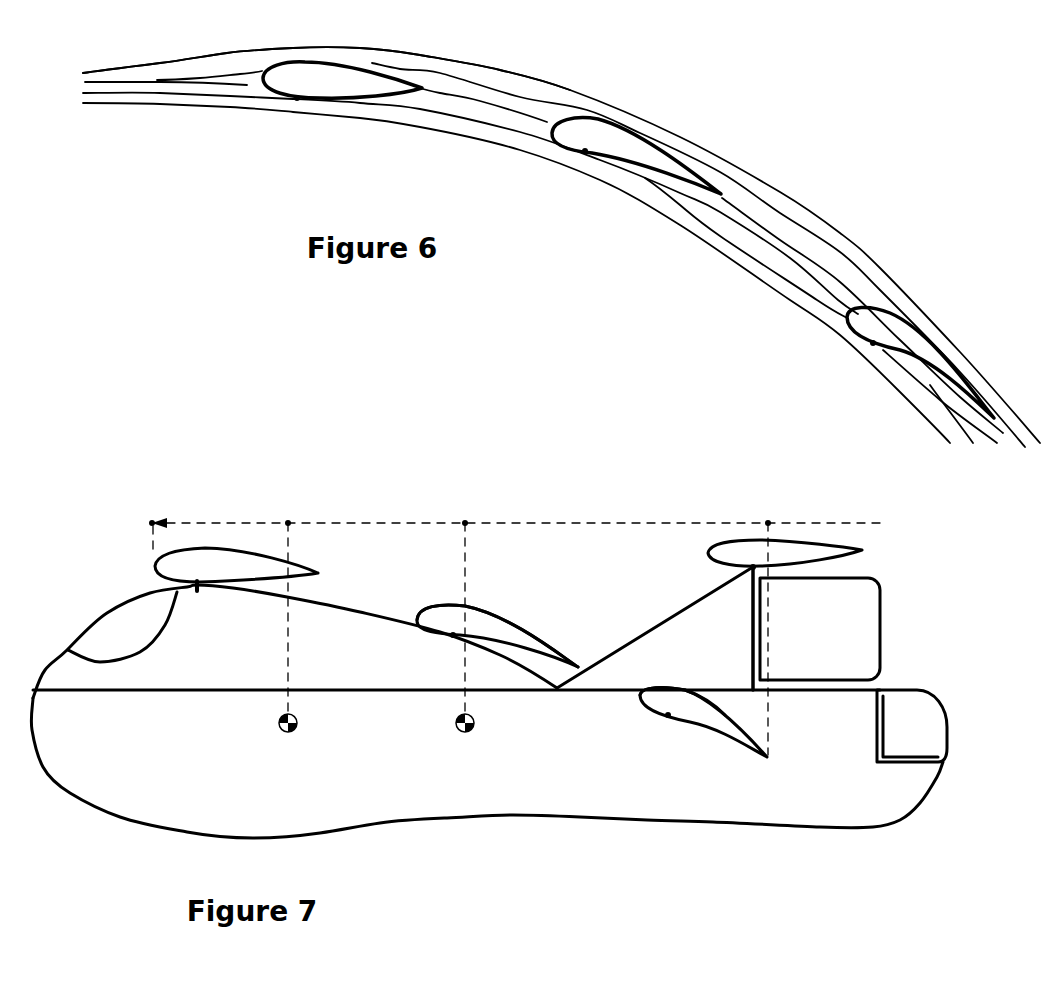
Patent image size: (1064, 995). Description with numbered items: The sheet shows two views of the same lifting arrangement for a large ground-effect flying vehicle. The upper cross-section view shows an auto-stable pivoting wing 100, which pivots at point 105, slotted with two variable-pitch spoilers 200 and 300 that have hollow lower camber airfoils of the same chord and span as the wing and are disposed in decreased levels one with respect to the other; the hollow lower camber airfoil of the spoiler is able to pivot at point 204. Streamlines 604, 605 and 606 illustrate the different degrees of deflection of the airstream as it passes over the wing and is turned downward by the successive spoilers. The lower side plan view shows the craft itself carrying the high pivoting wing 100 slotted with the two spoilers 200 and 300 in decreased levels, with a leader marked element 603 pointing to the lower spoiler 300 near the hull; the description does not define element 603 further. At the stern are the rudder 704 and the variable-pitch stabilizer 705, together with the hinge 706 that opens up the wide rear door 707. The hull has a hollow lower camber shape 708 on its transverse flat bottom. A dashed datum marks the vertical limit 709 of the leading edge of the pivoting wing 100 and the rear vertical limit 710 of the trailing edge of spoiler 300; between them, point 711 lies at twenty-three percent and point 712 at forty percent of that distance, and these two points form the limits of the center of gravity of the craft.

In FIG. 6, the pivoting wing 100 is at (326, 58).
In FIG. 7, the pivoting wing 100 is at (222, 560).
In FIG. 6, the pivot point 105 is at (297, 98).
In FIG. 7, the pivot point 105 is at (192, 585).
In FIG. 6, the spoiler 200 is at (613, 140).
In FIG. 7, the spoiler 200 is at (510, 633).
In FIG. 7, the pivot point of hollow lower camber airfoil 204 is at (447, 613).
In FIG. 6, the spoiler 300 is at (895, 337).
In FIG. 7, the spoiler 300 is at (697, 710).
In FIG. 7, the rear wing upper surface 603 is at (670, 700).
In FIG. 6, the airstream deflection 604 is at (490, 104).
In FIG. 6, the airstream deflection 605 is at (785, 253).
In FIG. 6, the airstream deflection 606 is at (1003, 437).
In FIG. 7, the rudder 704 is at (867, 620).
In FIG. 7, the variable-pitch stabilizer 705 is at (867, 556).
In FIG. 7, the hinge 706 is at (880, 686).
In FIG. 7, the rear door 707 is at (935, 731).
In FIG. 7, the hollow lower camber hull bottom 708 is at (450, 823).
In FIG. 7, the vertical limit of leading edge 709 is at (155, 522).
In FIG. 7, the rear vertical limit of trailing edge 710 is at (768, 518).
In FIG. 7, the center of gravity limit point 711 is at (290, 522).
In FIG. 7, the center of gravity limit point 712 is at (463, 522).